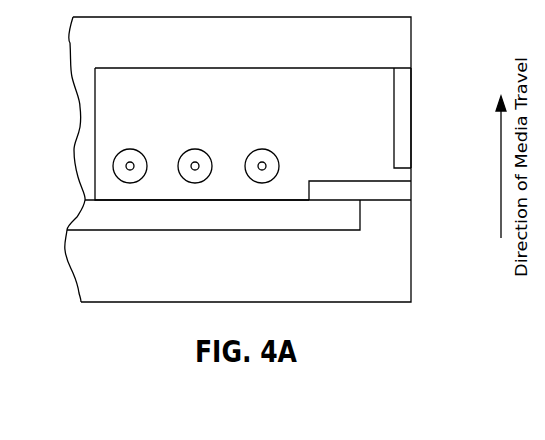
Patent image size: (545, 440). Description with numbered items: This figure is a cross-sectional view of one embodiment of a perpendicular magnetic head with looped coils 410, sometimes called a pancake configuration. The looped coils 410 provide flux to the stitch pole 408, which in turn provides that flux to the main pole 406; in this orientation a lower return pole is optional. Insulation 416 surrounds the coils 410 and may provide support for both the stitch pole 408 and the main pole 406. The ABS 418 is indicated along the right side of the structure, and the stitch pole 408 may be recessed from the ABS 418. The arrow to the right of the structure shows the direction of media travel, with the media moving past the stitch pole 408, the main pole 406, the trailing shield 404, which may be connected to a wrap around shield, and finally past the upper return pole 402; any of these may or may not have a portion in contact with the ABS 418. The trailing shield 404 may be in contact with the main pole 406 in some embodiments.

The upper return pole 402 is at (253, 49).
The trailing shield 404 is at (412, 101).
The main pole 406 is at (412, 185).
The stitch pole 408 is at (213, 215).
The looped coils 410 is at (133, 150).
The insulation 416 is at (253, 134).
The ABS 418 is at (413, 33).